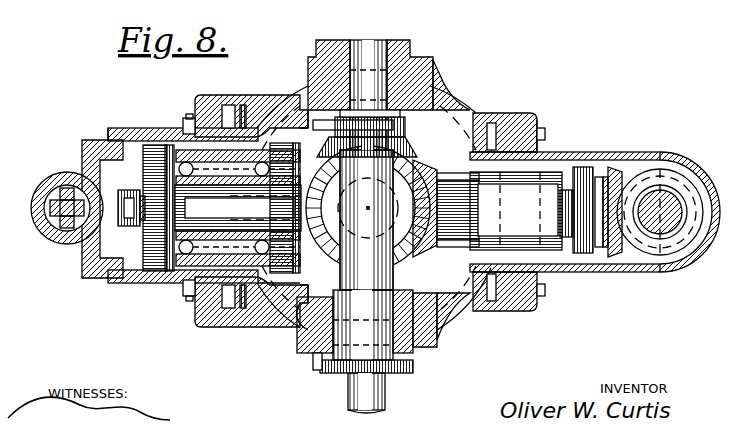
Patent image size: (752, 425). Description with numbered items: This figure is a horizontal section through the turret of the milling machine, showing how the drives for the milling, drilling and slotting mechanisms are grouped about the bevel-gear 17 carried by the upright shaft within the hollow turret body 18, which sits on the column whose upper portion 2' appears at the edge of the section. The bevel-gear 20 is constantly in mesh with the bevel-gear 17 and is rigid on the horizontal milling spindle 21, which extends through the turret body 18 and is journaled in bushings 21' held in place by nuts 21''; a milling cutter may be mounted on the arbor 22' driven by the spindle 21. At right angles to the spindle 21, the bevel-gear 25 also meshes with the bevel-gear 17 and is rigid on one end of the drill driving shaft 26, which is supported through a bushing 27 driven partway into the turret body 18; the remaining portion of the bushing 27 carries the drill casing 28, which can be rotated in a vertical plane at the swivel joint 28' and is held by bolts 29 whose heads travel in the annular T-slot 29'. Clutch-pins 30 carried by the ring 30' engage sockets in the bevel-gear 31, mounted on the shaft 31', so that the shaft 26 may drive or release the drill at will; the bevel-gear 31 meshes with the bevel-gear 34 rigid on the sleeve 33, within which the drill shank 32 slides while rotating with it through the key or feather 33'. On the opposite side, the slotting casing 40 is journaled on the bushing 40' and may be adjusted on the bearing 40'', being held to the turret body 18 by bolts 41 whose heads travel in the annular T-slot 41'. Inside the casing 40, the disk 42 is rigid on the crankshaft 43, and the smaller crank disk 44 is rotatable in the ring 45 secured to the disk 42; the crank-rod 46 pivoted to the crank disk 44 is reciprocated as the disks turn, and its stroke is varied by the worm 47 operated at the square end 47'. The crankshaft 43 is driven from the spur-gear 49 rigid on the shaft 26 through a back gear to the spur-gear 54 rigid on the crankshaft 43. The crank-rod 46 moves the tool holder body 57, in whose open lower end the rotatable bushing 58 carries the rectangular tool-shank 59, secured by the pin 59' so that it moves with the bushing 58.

The housing flange 2' is at (279, 326).
The bevel-gear 17 is at (330, 258).
The turret body 18 is at (280, 95).
The bevel-gear 20 is at (430, 118).
The milling spindle 21 is at (365, 185).
The bushings 21' is at (379, 195).
The nuts 21'' is at (389, 187).
The arbor 22' is at (381, 393).
The bevel-gear 25 is at (425, 255).
The drill driving shaft 26 is at (580, 175).
The bushing 27 is at (540, 210).
The drill casing 28 is at (558, 212).
The swivel joint 28' is at (541, 121).
The bolts 29 is at (551, 214).
The annular T-slot 29' is at (540, 214).
The clutch-pins 30 is at (606, 240).
The ring 30' is at (590, 195).
The bevel-gear 31 is at (640, 187).
The shaft 31' is at (631, 234).
The drill shank 32 is at (668, 238).
The sleeve 33 is at (675, 212).
The key or feather 33' is at (686, 193).
The bevel-gear 34 is at (712, 165).
The casing 40 is at (192, 198).
The bushing 40' is at (165, 201).
The bearing 40'' is at (223, 213).
The bolts 41 is at (171, 207).
The annular T-slot 41' is at (249, 206).
The disk 42 is at (173, 140).
The crankshaft 43 is at (216, 225).
The crank disk 44 is at (148, 135).
The ring 45 is at (130, 135).
The crank-rod 46 is at (130, 228).
The worm 47 is at (138, 229).
The square end 47' is at (127, 263).
The spur-gear 49 is at (450, 175).
The spur-gear 54 is at (283, 165).
The tool holder body 57 is at (72, 178).
The bushing 58 is at (58, 195).
The tool-shank 59 is at (53, 222).
The pin 59' is at (41, 211).